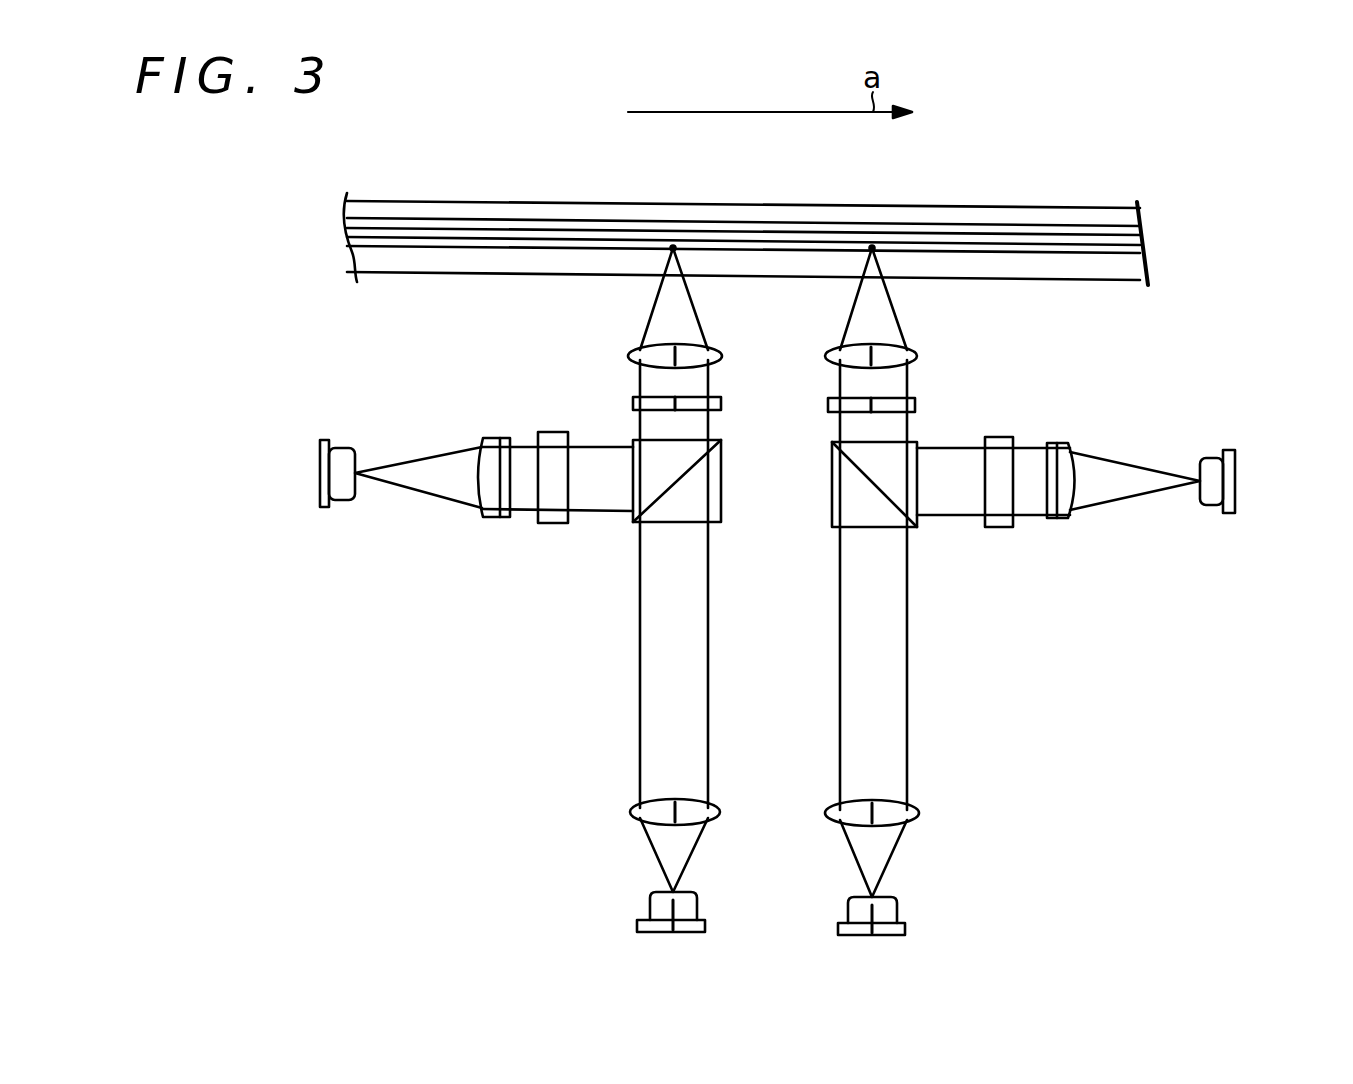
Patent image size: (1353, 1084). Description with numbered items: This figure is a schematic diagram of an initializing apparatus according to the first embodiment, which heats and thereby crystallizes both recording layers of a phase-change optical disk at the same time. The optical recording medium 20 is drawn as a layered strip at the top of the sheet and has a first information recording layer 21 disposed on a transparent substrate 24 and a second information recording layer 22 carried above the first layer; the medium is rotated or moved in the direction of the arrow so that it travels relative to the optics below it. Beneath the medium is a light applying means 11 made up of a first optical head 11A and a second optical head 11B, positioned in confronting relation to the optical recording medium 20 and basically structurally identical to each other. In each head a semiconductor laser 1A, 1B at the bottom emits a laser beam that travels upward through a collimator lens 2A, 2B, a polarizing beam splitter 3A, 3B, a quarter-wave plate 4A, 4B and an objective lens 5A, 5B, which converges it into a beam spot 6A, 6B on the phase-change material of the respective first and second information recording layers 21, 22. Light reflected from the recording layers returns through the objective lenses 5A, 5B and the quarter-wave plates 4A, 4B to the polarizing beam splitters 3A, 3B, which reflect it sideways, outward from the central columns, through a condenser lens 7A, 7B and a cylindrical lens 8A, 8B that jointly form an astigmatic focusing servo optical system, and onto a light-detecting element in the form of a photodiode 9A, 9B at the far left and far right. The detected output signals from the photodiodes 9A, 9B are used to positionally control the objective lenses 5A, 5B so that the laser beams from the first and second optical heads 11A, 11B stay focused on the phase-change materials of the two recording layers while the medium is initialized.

The semiconductor laser 1A is at (650, 906).
The semiconductor laser 1B is at (897, 906).
The collimator lens 2A is at (630, 813).
The collimator lens 2B is at (918, 804).
The polarizing beam splitter 3A is at (633, 522).
The polarizing beam splitter 3B is at (912, 522).
The quarter-wave plate 4A is at (633, 406).
The quarter-wave plate 4B is at (915, 406).
The objective lens 5A is at (632, 357).
The objective lens 5B is at (913, 349).
The beam spot 6A is at (672, 247).
The beam spot 6B is at (872, 247).
The condenser lens 7A is at (545, 524).
The condenser lens 7B is at (1015, 522).
The cylindrical lens 8A is at (483, 441).
The cylindrical lens 8B is at (1076, 515).
The photodiode 9A is at (320, 478).
The photodiode 9B is at (1215, 506).
The light applying means 11 is at (1219, 367).
The first optical head 11A is at (641, 299).
The second optical head 11B is at (898, 299).
The optical recording medium 20 is at (1006, 207).
The first information recording layer 21 is at (1141, 238).
The second information recording layer 22 is at (1100, 228).
The transparent substrate 24 is at (1142, 264).